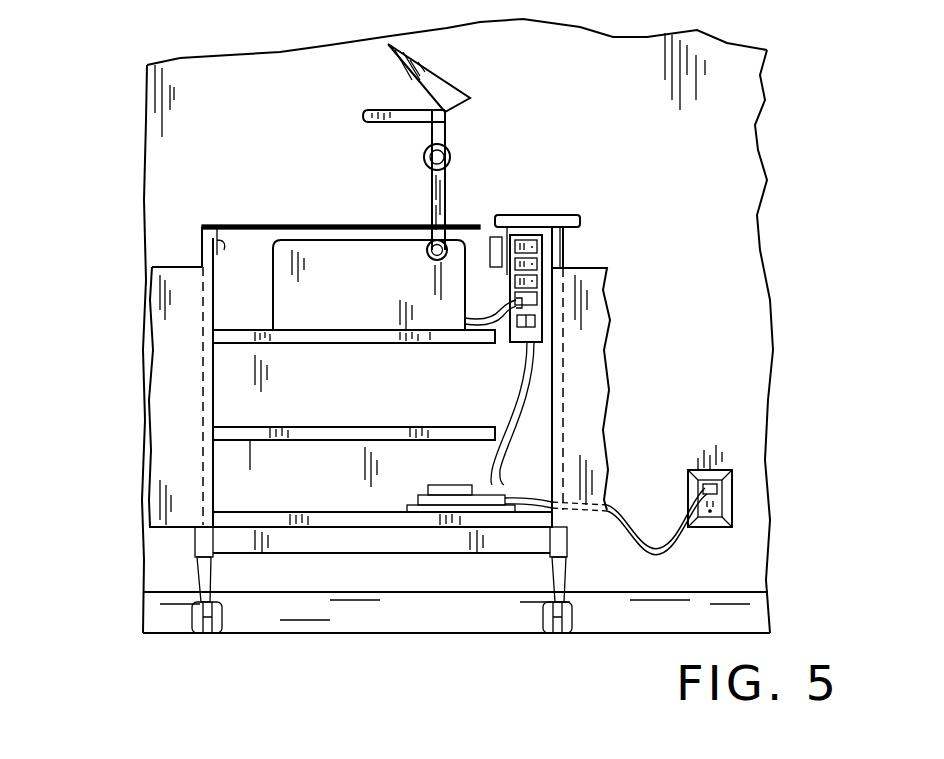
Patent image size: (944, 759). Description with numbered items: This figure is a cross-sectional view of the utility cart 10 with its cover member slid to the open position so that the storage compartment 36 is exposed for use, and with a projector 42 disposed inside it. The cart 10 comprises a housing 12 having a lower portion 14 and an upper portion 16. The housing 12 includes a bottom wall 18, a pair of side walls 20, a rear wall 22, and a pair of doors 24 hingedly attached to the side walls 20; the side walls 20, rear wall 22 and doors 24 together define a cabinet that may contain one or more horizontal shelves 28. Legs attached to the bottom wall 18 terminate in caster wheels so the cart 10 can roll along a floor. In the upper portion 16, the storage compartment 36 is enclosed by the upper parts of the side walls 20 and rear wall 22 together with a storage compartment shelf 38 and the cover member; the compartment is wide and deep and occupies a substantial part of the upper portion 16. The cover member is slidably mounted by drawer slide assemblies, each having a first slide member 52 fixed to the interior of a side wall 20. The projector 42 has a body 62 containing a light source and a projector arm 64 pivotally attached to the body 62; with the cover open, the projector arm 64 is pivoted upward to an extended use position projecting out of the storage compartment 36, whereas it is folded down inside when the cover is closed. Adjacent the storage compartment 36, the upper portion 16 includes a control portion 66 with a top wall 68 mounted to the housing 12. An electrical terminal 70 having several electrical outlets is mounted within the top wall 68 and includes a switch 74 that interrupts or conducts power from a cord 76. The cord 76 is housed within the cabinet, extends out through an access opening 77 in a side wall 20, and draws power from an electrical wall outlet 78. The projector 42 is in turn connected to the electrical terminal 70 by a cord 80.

The utility cart 10 is at (146, 108).
The housing 12 is at (190, 212).
The lower portion 14 is at (129, 521).
The upper portion 16 is at (130, 314).
The bottom wall 18 is at (343, 520).
The side walls 20 is at (202, 250).
The rear wall 22 is at (470, 393).
The doors 24 is at (190, 387).
The horizontal shelves 28 is at (257, 440).
The storage compartment 36 is at (243, 256).
The storage compartment shelf 38 is at (248, 330).
The projector 42 is at (454, 206).
The first slide member 52 is at (227, 230).
The body 62 is at (365, 295).
The projector arm 64 is at (447, 133).
The control portion 66 is at (555, 288).
The top wall 68 is at (575, 215).
The electrical terminal 70 is at (541, 322).
The switch 74 is at (541, 333).
The cord 76 is at (633, 530).
The access opening 77 is at (560, 513).
The electrical wall outlet 78 is at (713, 470).
The cord 80 is at (498, 318).